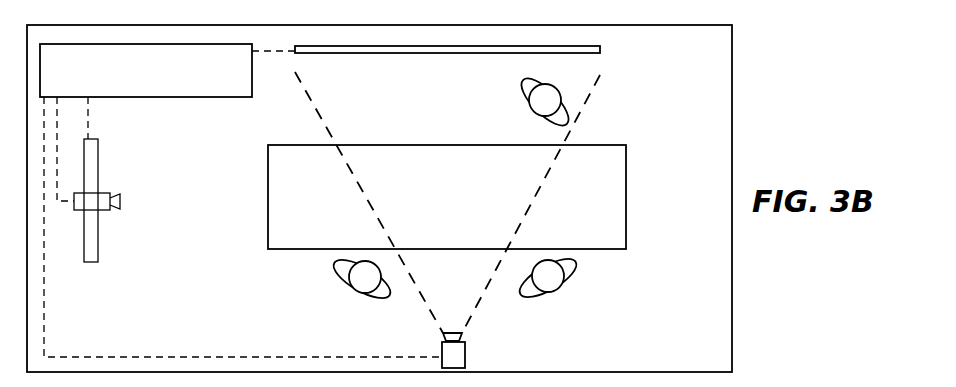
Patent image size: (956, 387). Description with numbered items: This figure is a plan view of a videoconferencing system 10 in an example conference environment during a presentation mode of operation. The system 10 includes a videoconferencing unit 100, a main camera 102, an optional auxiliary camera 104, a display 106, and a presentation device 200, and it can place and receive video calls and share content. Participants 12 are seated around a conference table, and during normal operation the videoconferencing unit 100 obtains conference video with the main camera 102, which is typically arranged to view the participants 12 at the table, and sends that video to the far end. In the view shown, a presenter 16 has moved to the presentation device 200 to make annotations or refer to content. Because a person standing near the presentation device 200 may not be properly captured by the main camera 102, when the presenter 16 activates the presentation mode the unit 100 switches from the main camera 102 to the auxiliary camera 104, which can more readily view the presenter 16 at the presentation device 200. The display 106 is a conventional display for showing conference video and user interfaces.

The videoconferencing system 10 is at (703, 118).
The participants 12 is at (560, 292).
The presenter 16 is at (562, 92).
The videoconferencing unit 100 is at (163, 99).
The main camera 102 is at (105, 211).
The auxiliary camera 104 is at (465, 355).
The display 106 is at (98, 262).
The presentation device 200 is at (398, 54).